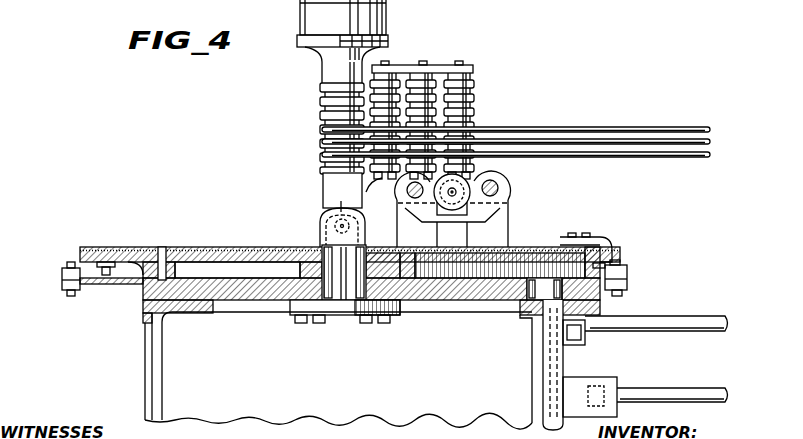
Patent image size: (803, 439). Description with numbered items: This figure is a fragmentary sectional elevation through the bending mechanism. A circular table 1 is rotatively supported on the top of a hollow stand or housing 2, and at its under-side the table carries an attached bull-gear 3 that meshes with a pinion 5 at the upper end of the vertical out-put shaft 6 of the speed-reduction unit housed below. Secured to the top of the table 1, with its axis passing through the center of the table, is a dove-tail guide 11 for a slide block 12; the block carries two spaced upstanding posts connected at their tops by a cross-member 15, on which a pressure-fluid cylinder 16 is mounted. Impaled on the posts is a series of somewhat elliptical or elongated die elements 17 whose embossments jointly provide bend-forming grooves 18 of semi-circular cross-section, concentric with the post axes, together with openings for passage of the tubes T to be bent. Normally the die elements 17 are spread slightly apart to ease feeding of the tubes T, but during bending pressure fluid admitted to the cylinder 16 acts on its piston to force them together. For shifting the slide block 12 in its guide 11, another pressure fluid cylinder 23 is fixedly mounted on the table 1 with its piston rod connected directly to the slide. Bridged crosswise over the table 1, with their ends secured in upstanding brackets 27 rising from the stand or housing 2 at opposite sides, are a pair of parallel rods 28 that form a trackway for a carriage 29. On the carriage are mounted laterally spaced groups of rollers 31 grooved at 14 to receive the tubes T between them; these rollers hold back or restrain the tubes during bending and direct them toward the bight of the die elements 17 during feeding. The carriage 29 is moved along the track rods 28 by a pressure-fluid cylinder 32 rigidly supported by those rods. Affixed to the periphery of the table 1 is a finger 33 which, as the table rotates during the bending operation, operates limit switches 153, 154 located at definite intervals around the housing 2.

The circular table 1 is at (213, 247).
The hollow stand or housing 2 is at (143, 363).
The bull-gear 3 is at (163, 247).
The pinion 5 is at (544, 289).
The vertical out-put shaft 6 is at (543, 360).
The dove-tail guide 11 is at (319, 226).
The slide block 12 is at (322, 194).
The grooves of rollers 14 is at (437, 109).
The cross-member 15 is at (327, 72).
The pressure-fluid cylinder 16 is at (313, 17).
The die elements 17 is at (321, 88).
The bend-forming grooves 18 is at (323, 125).
The pressure fluid cylinder 23 is at (343, 198).
The upstanding brackets 27 is at (473, 238).
The parallel rods 28 is at (499, 189).
The carriage 29 is at (381, 196).
The rollers 31 is at (460, 72).
The pressure-fluid cylinder 32 is at (481, 206).
The finger 33 is at (607, 237).
The limit switch 153 is at (628, 272).
The limit switch 154 is at (68, 264).
The tubes T is at (612, 158).